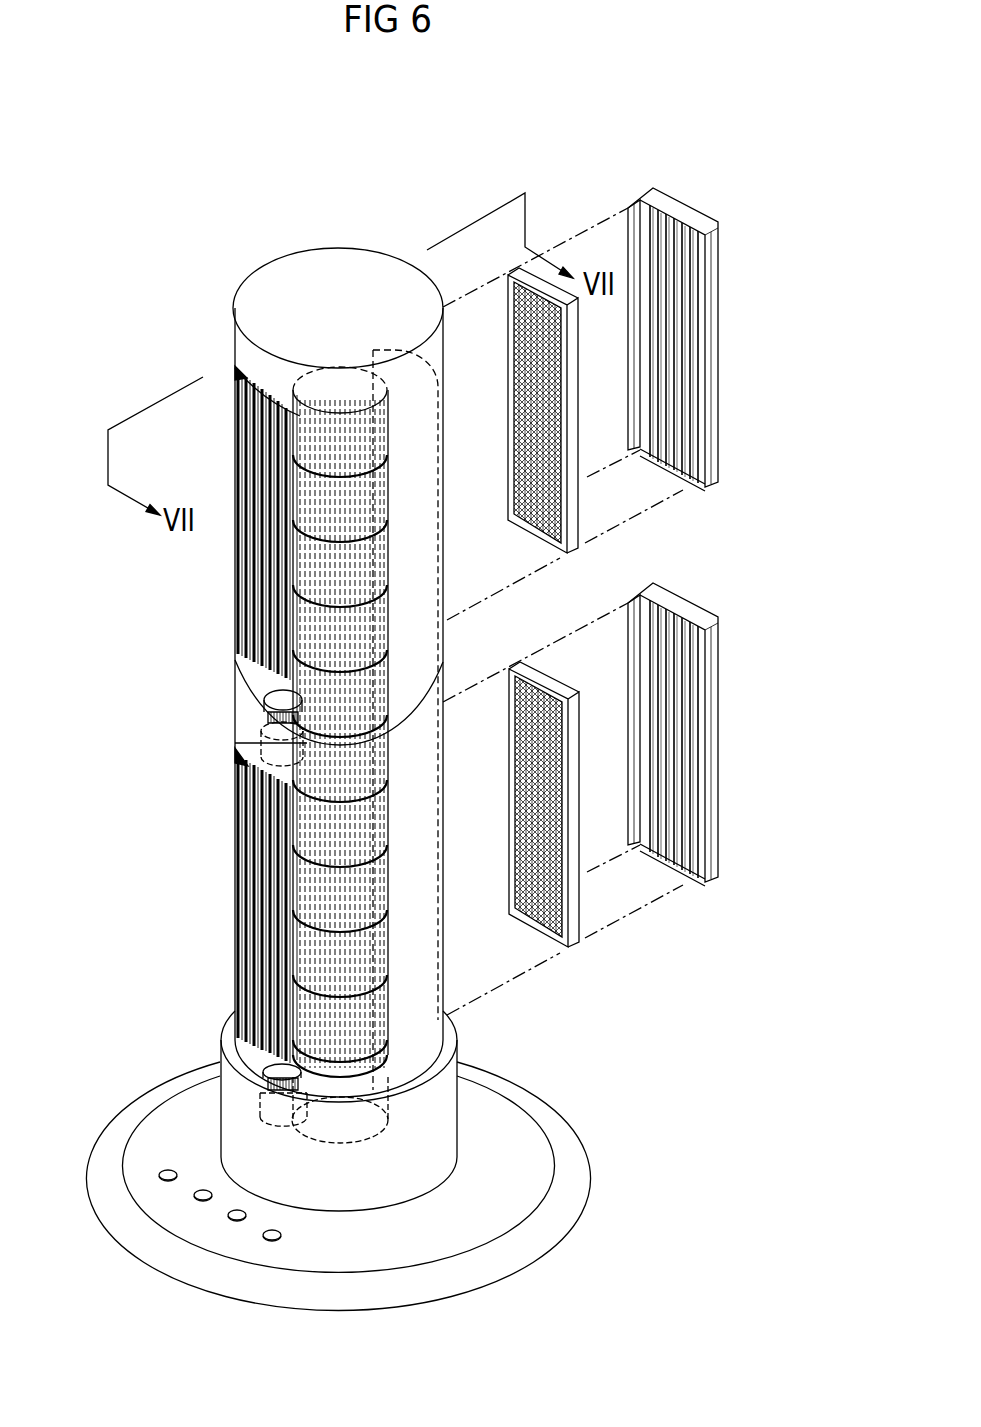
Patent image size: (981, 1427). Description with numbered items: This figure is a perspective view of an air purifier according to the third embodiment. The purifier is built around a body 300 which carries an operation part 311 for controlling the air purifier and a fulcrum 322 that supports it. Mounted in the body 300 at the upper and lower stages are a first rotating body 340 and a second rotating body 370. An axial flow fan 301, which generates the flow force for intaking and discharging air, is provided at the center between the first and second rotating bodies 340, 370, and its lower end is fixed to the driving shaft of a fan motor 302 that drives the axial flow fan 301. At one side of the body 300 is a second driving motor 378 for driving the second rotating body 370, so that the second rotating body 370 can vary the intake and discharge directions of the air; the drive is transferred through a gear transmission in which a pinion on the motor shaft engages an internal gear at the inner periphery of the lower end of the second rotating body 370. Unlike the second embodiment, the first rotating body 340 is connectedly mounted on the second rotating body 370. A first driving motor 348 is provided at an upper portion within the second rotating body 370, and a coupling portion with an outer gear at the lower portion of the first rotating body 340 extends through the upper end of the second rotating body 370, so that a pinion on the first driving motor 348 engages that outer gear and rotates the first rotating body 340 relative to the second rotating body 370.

The body 300 is at (212, 246).
The first rotating body 340 is at (247, 358).
The second rotating body 370 is at (247, 698).
The axial flow fan 301 is at (273, 737).
The first driving motor 348 is at (267, 747).
The second driving motor 378 is at (192, 1056).
The fan motor 302 is at (350, 1128).
The operation part 311 is at (212, 1212).
The fulcrum 322 is at (541, 1224).